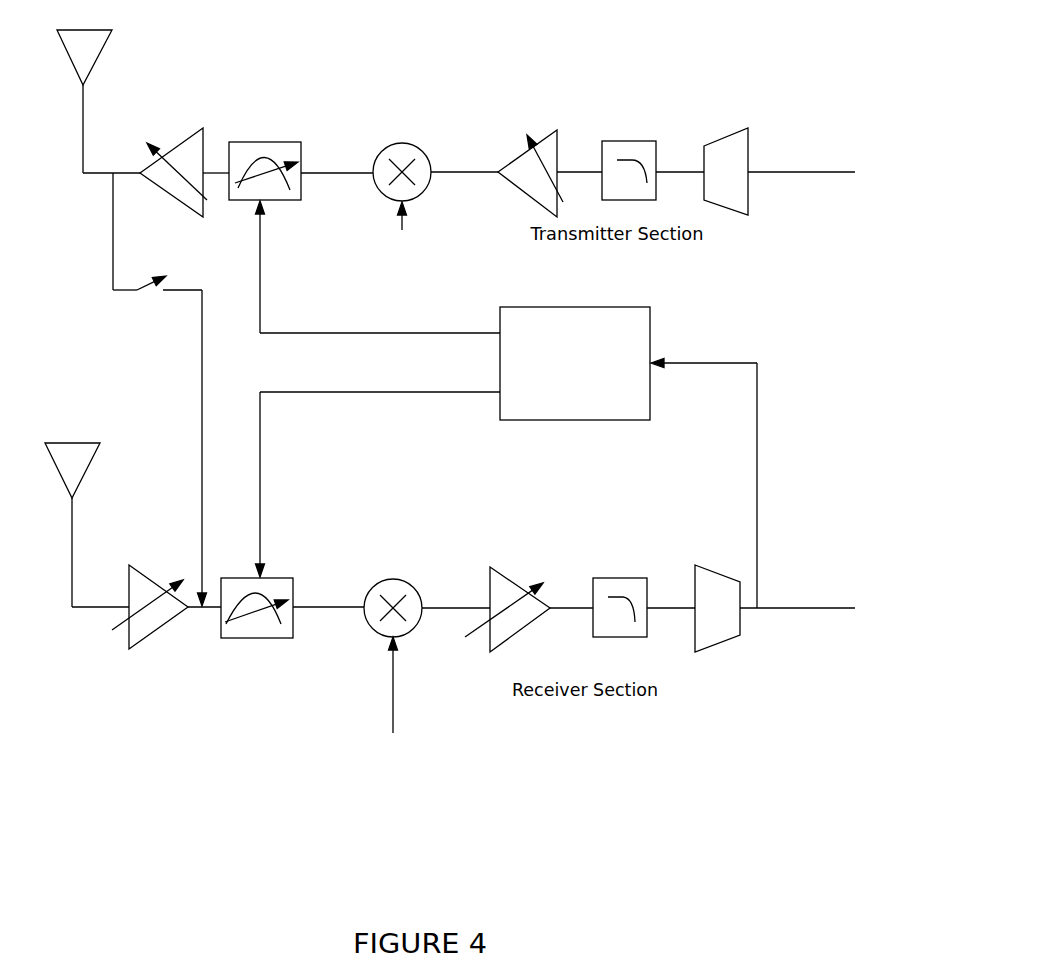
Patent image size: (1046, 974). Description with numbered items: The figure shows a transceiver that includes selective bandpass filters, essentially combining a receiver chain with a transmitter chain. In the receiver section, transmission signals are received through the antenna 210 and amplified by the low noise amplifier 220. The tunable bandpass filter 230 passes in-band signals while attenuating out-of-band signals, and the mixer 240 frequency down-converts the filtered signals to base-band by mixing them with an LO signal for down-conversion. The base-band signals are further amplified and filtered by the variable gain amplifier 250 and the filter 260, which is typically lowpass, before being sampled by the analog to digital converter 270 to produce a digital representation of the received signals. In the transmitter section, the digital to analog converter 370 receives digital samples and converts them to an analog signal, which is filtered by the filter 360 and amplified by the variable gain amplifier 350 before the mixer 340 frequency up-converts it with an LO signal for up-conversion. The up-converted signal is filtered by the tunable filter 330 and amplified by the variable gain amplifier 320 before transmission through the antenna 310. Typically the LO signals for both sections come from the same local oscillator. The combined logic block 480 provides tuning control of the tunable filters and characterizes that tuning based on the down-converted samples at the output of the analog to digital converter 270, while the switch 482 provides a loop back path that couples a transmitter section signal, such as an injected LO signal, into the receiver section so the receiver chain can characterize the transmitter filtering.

The antenna 210 is at (94, 451).
The low noise amplifier 220 is at (146, 569).
The tunable bandpass filter 230 is at (290, 640).
The mixer 240 is at (385, 576).
The variable gain amplifier 250 is at (508, 574).
The filter 260 is at (618, 570).
The analog to digital converter 270 is at (718, 570).
The antenna 310 is at (117, 40).
The variable gain amplifier 320 is at (186, 130).
The tunable filter 330 is at (258, 134).
The mixer 340 is at (393, 134).
The variable gain amplifier 350 is at (514, 136).
The filter 360 is at (627, 132).
The digital to analog converter 370 is at (729, 134).
The combined logic block 480 is at (507, 404).
The switch 482 is at (146, 265).